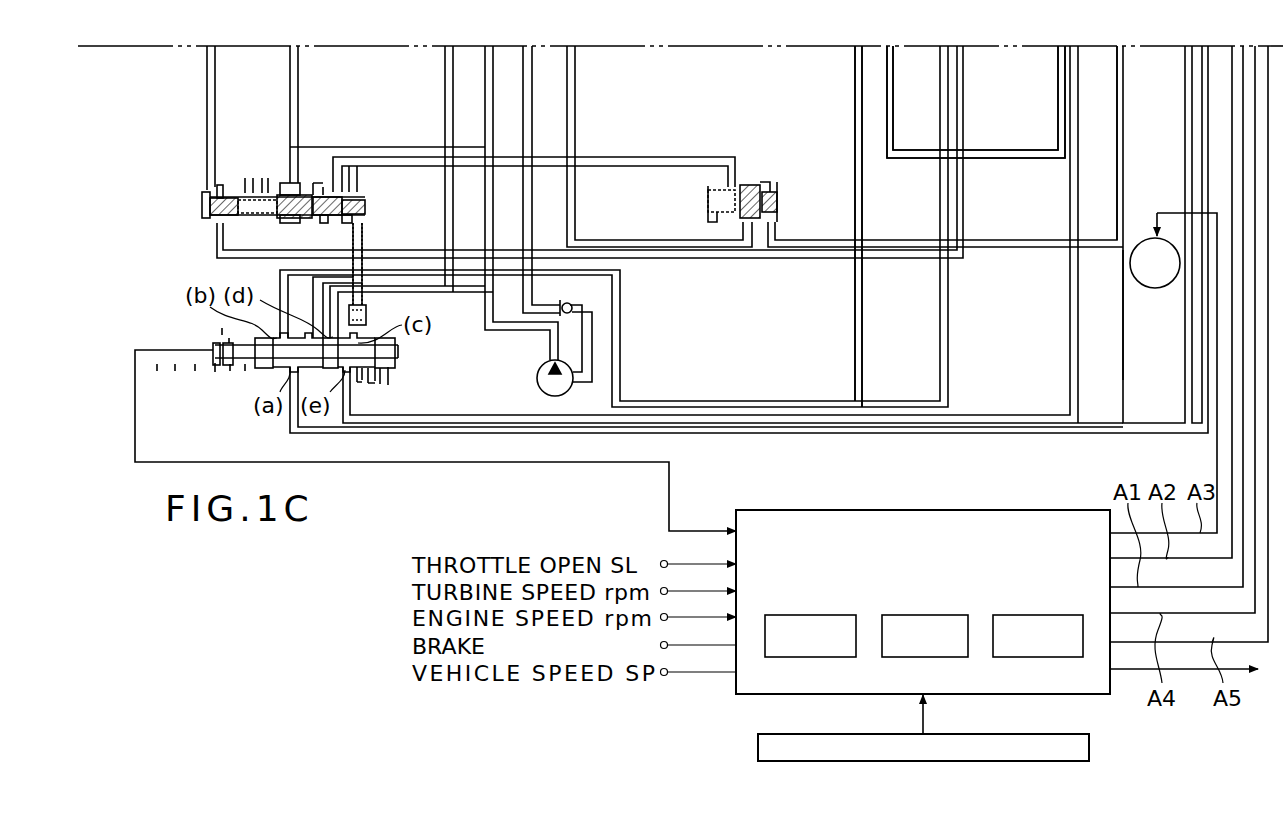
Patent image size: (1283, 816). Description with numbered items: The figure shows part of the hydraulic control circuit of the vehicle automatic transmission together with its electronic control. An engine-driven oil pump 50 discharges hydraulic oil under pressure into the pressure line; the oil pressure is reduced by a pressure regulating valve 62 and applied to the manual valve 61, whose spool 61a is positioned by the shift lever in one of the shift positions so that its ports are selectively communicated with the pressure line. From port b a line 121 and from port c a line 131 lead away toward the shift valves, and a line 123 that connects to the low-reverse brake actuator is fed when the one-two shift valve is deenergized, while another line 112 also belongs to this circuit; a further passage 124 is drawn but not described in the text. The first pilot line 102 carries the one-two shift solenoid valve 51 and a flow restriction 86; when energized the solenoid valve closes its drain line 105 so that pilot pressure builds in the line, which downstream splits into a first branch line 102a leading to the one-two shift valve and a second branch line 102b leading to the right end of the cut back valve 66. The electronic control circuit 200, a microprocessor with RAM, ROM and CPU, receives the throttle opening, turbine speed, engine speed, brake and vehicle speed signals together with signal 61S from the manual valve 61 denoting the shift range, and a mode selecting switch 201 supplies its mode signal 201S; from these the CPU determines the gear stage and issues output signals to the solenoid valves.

The oil pump 50 is at (537, 383).
The 1-2 shift solenoid valve 51 is at (1152, 230).
The manual valve 61 is at (395, 357).
The valve spool 61a is at (212, 347).
The signal 61S is at (435, 440).
The pressure regulating valve 62 is at (365, 207).
The cut back valve 66 is at (777, 210).
The flow restriction 86 is at (1120, 337).
The first pilot line 102 is at (1127, 383).
The first branch line 102a is at (1120, 165).
The second branch line 102b is at (1000, 240).
The drain line 105 is at (1127, 267).
The line 112 is at (857, 308).
The line 121 is at (688, 403).
The line 123 is at (1020, 158).
The oil passage 124 is at (655, 157).
The line 131 is at (720, 260).
The electronic control circuit 200 is at (827, 509).
The mode selecting switch 201 is at (1090, 757).
The mode select signal 201S is at (960, 714).